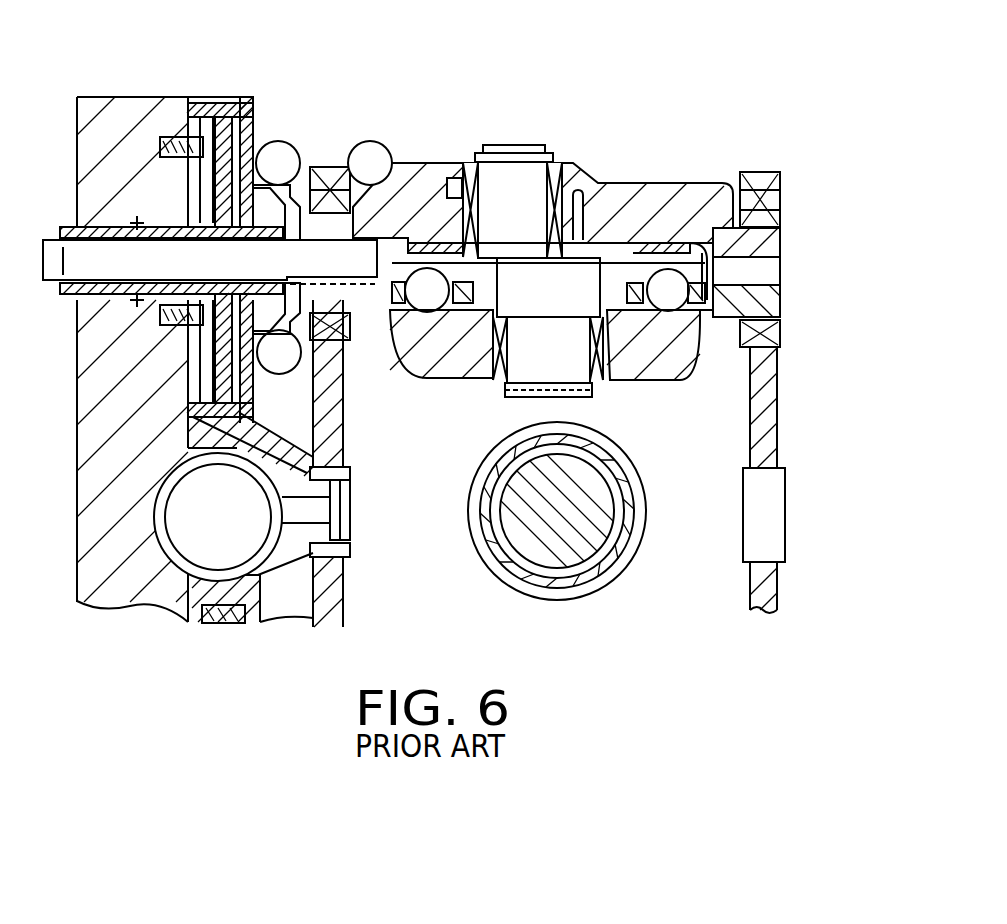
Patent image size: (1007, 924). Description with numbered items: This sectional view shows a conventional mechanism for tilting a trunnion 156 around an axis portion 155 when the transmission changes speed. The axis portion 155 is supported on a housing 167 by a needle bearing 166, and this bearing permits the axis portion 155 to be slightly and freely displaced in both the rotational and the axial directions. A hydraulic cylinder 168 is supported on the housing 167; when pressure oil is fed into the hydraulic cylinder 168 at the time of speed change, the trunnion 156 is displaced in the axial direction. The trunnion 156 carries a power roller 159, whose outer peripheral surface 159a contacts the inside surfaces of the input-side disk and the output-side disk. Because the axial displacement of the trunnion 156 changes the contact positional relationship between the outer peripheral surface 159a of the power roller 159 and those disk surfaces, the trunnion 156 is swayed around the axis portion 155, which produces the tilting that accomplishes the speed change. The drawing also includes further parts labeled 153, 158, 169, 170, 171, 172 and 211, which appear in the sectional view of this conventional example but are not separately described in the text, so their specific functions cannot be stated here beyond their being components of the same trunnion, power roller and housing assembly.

The ring bearing 153 is at (587, 540).
The axis portion 155 is at (338, 165).
The trunnion 156 is at (640, 198).
The shaft 158 is at (523, 362).
The power roller 159 is at (633, 380).
The outer peripheral surface 159a is at (630, 378).
The needle bearing 166 is at (327, 163).
The housing 167 is at (770, 452).
The hydraulic cylinder 168 is at (203, 372).
The outer race 169 is at (712, 335).
The ring 170 is at (700, 263).
The ball 171 is at (420, 297).
The ring 172 is at (720, 310).
The seal 211 is at (373, 238).